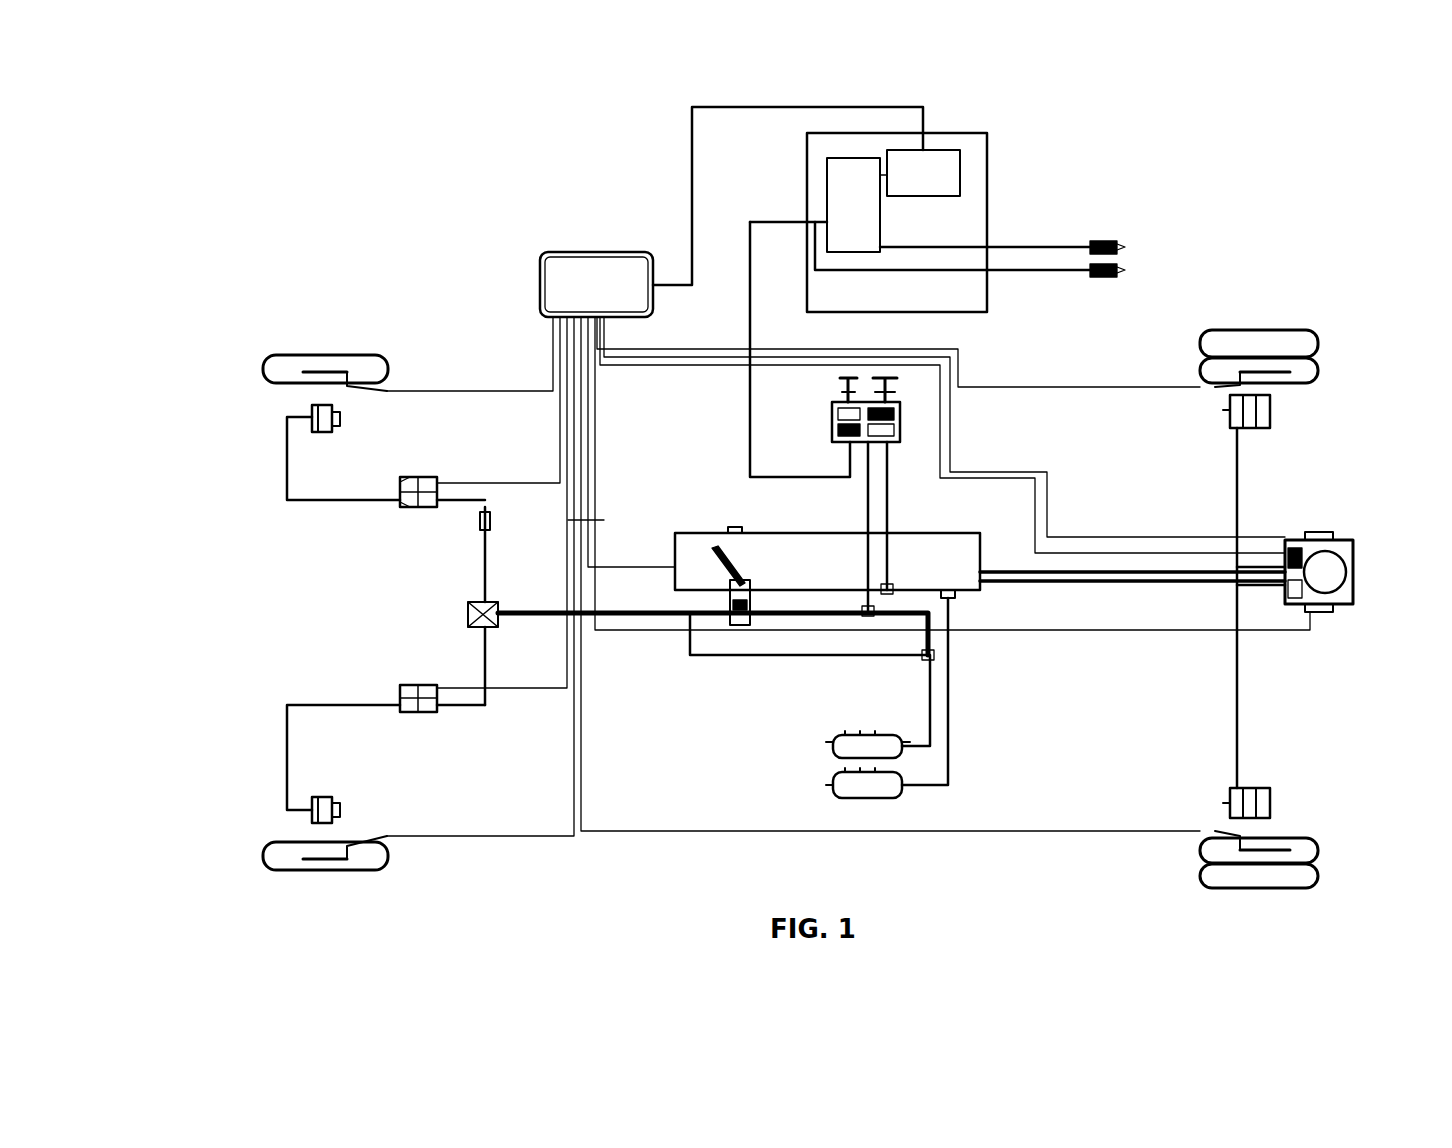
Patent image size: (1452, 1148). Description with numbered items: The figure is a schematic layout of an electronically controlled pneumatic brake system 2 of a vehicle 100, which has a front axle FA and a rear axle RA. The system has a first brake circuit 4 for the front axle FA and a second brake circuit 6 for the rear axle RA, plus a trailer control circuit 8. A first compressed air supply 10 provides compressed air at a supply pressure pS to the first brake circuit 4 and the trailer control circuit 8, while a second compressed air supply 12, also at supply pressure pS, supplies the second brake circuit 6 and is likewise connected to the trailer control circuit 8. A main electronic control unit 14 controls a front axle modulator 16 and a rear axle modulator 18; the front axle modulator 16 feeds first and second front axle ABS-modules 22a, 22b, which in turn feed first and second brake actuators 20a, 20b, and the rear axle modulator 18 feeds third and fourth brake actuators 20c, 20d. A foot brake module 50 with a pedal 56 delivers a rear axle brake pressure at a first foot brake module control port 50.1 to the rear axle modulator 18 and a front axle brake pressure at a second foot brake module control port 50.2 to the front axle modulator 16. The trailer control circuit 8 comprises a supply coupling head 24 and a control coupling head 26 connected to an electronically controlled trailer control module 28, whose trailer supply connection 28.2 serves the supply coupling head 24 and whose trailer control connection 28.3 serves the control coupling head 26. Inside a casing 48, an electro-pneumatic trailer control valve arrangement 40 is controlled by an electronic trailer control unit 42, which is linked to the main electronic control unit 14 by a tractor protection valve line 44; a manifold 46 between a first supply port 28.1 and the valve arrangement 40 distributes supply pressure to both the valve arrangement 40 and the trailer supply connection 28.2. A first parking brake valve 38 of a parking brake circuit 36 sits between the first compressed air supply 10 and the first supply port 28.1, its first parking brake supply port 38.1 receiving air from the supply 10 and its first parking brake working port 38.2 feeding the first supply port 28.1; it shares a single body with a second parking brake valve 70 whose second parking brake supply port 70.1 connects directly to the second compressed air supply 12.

The electronically controlled pneumatic brake system 2 is at (322, 218).
The vehicle 100 is at (295, 272).
The main electronic control unit 14 is at (575, 250).
The tractor protection valve line 44 is at (692, 107).
The electronically controlled trailer control module 28 is at (937, 200).
The electro-pneumatic trailer control valve arrangement 40 is at (827, 178).
The electronic trailer control unit 42 is at (942, 160).
The casing 48 is at (883, 312).
The manifold 46 is at (812, 230).
The first supply port 28.1 is at (805, 220).
The trailer control connection 28.3 is at (990, 245).
The trailer supply connection 28.2 is at (990, 272).
The control coupling head 26 is at (1120, 250).
The supply coupling head 24 is at (1120, 272).
The trailer control circuit 8 is at (1030, 342).
The first parking brake valve 38 is at (832, 410).
The parking brake circuit 36 is at (718, 437).
The second parking brake valve 70 is at (905, 415).
The second parking brake supply port 70.1 is at (905, 440).
The first parking brake working port 38.2 is at (845, 448).
The first parking brake supply port 38.1 is at (882, 448).
The foot brake module 50 is at (951, 619).
The pedal 56 is at (745, 575).
The second foot brake module control port 50.2 is at (738, 625).
The first foot brake module control port 50.1 is at (728, 580).
The front axle modulator 16 is at (468, 610).
The first compressed air supply 10 is at (830, 745).
The second compressed air supply 12 is at (830, 785).
The supply pressure pS is at (930, 705).
The first brake actuator 20a is at (330, 437).
The second brake actuator 20b is at (330, 797).
The first front axle ABS-module 22a is at (415, 507).
The second front axle ABS-module 22b is at (415, 685).
The first brake circuit 4 is at (245, 715).
The front axle FA is at (235, 475).
The second brake circuit 6 is at (1345, 718).
The rear axle RA is at (1338, 452).
The third brake actuator 20c is at (1232, 795).
The fourth brake actuator 20d is at (1232, 410).
The rear axle modulator 18 is at (1353, 568).